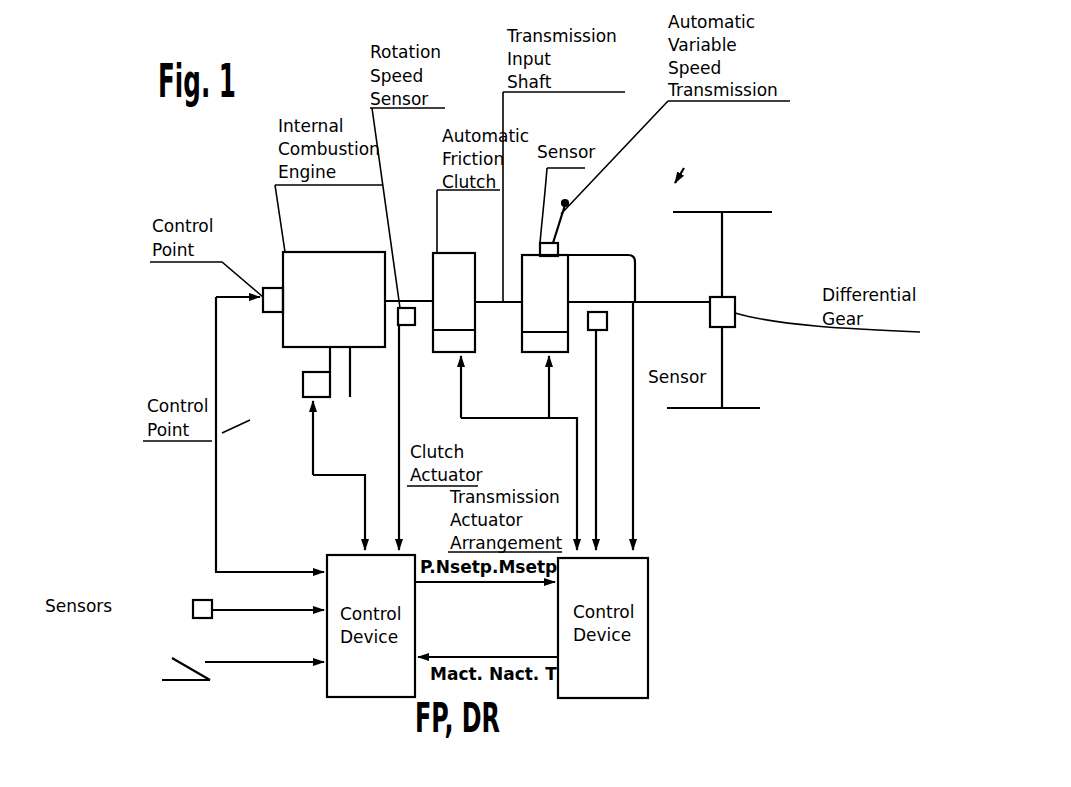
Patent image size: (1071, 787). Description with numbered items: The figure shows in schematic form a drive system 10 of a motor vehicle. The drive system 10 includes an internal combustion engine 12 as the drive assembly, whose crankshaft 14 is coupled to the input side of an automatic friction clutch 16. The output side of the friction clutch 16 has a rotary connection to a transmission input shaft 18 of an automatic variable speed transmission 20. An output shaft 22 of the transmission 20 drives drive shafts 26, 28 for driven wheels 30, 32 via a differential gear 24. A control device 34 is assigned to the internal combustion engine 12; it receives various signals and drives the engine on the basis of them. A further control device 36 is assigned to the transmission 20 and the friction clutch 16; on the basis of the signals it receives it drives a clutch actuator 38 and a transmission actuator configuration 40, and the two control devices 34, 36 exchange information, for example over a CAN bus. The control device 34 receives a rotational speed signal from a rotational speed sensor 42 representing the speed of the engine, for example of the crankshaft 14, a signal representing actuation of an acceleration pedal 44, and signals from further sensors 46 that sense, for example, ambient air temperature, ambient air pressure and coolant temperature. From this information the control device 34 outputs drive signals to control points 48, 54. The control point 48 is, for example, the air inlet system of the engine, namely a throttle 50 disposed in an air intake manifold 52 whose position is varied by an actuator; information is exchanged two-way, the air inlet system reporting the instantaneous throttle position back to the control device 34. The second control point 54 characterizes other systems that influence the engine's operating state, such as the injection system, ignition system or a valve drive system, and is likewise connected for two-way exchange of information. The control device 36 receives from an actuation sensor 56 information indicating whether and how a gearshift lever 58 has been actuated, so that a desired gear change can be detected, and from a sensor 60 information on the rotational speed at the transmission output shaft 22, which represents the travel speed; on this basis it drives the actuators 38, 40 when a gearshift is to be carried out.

The drive system 10 is at (694, 153).
The internal combustion engine 12 is at (318, 252).
The crankshaft 14 is at (403, 308).
The automatic friction clutch 16 is at (462, 252).
The transmission input shaft 18 is at (506, 262).
The automatic variable speed transmission 20 is at (566, 268).
The output shaft 22 is at (660, 302).
The differential gear 24 is at (735, 310).
The drive shaft 26 is at (725, 250).
The drive shaft 28 is at (725, 367).
The driven wheel 30 is at (762, 212).
The driven wheel 32 is at (740, 410).
The control device 34 is at (365, 697).
The control device 36 is at (648, 645).
The clutch actuator 38 is at (441, 353).
The transmission actuator configuration 40 is at (531, 353).
The rotational speed sensor 42 is at (398, 326).
The acceleration pedal 44 is at (190, 685).
The further sensors 46 is at (192, 609).
The control point 48 is at (303, 384).
The throttle 50 is at (350, 382).
The air intake manifold 52 is at (328, 360).
The second control point 54 is at (263, 292).
The actuation sensor 56 is at (562, 179).
The gearshift lever 58 is at (602, 185).
The sensor 60 is at (607, 328).